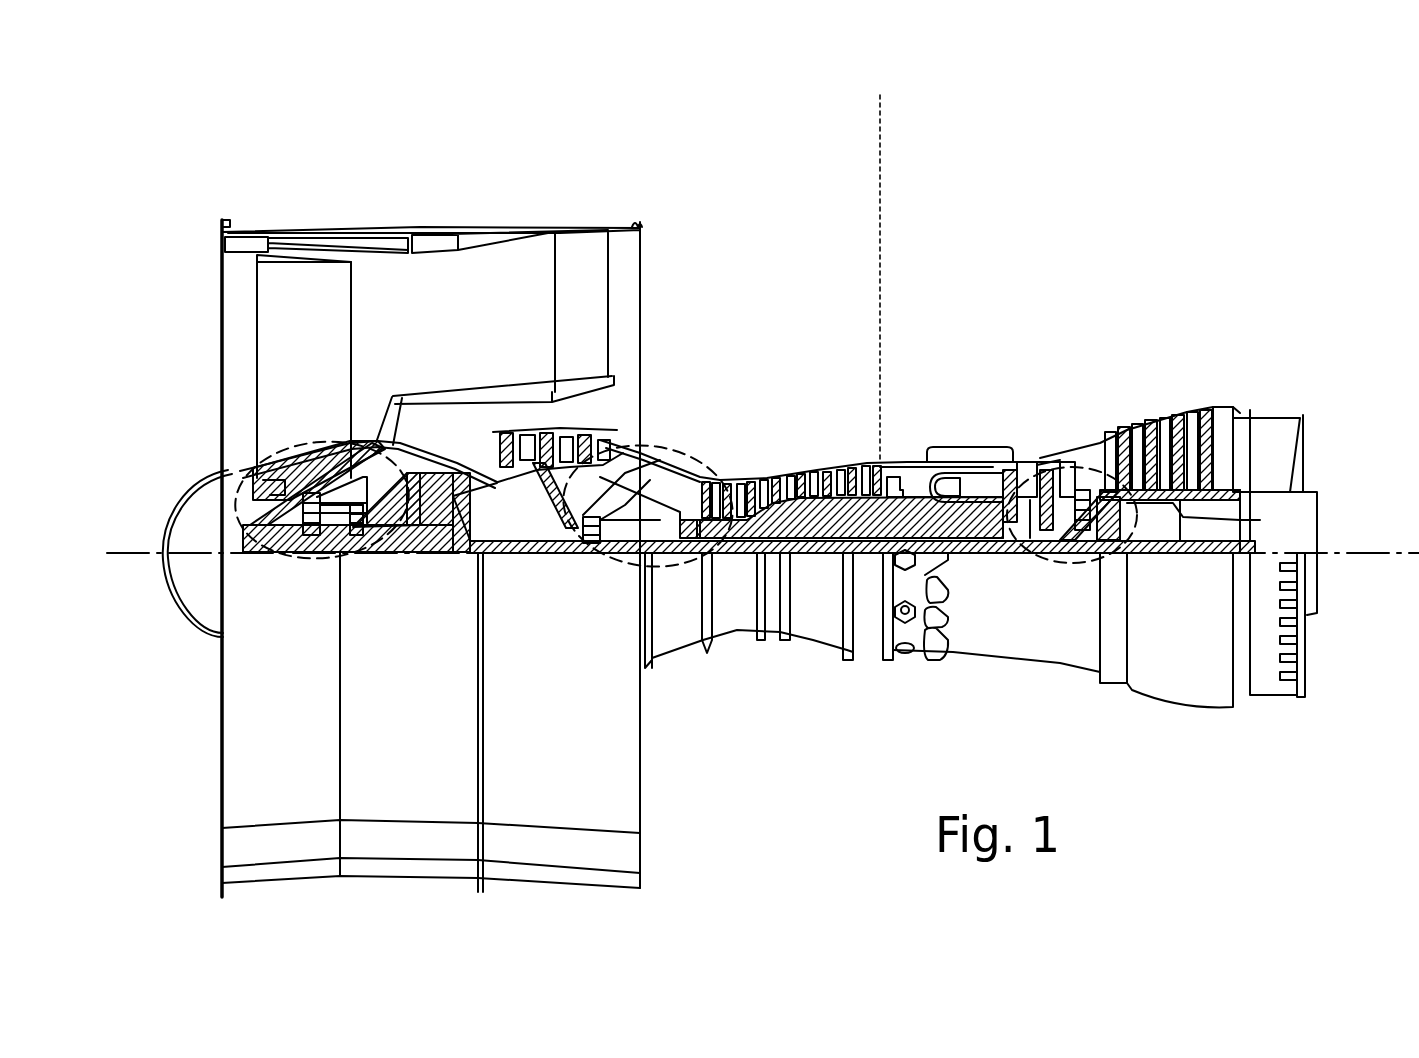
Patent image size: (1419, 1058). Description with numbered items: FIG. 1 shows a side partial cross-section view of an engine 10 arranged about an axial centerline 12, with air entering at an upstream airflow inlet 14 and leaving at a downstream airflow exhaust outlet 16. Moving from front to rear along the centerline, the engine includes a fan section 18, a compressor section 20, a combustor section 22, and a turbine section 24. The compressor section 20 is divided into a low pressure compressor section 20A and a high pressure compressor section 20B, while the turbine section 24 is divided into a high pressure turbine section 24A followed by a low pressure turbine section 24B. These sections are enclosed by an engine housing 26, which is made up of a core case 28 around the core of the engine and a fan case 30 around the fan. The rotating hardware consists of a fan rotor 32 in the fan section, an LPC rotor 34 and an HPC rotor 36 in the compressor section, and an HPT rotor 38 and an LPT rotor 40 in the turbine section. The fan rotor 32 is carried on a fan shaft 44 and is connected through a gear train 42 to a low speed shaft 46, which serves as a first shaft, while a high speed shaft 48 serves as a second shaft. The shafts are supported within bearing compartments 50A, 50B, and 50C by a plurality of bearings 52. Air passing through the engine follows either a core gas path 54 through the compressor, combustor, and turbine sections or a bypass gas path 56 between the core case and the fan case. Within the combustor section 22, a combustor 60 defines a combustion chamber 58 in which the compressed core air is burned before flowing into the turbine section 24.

The engine 10 is at (1242, 186).
The axial centerline 12 is at (1370, 553).
The upstream airflow inlet 14 is at (222, 330).
The downstream airflow exhaust outlet 16 is at (1310, 452).
The fan section 18 is at (410, 192).
The compressor section 20 is at (880, 132).
The low pressure compressor section 20A is at (630, 367).
The high pressure compressor section 20B is at (880, 337).
The combustor section 22 is at (990, 338).
The turbine section 24 is at (1255, 245).
The high pressure turbine section 24A is at (1095, 338).
The low pressure turbine section 24B is at (1255, 338).
The engine housing 26 is at (657, 670).
The core case 28 is at (870, 655).
The fan case 30 is at (560, 889).
The fan rotor 32 is at (245, 478).
The LPC rotor 34 is at (540, 490).
The HPC rotor 36 is at (815, 555).
The HPT rotor 38 is at (1025, 555).
The LPT rotor 40 is at (1242, 519).
The gear train 42 is at (440, 555).
The fan shaft 44 is at (300, 555).
The low speed shaft 46 is at (1183, 555).
The high speed shaft 48 is at (972, 553).
The bearing compartment 50A is at (288, 443).
The bearing compartment 50B is at (645, 452).
The bearing compartment 50C is at (1050, 462).
The plurality of bearings 52 is at (320, 556).
The core gas path 54 is at (423, 427).
The bypass gas path 56 is at (442, 314).
The combustion chamber 58 is at (960, 487).
The combustor 60 is at (975, 455).